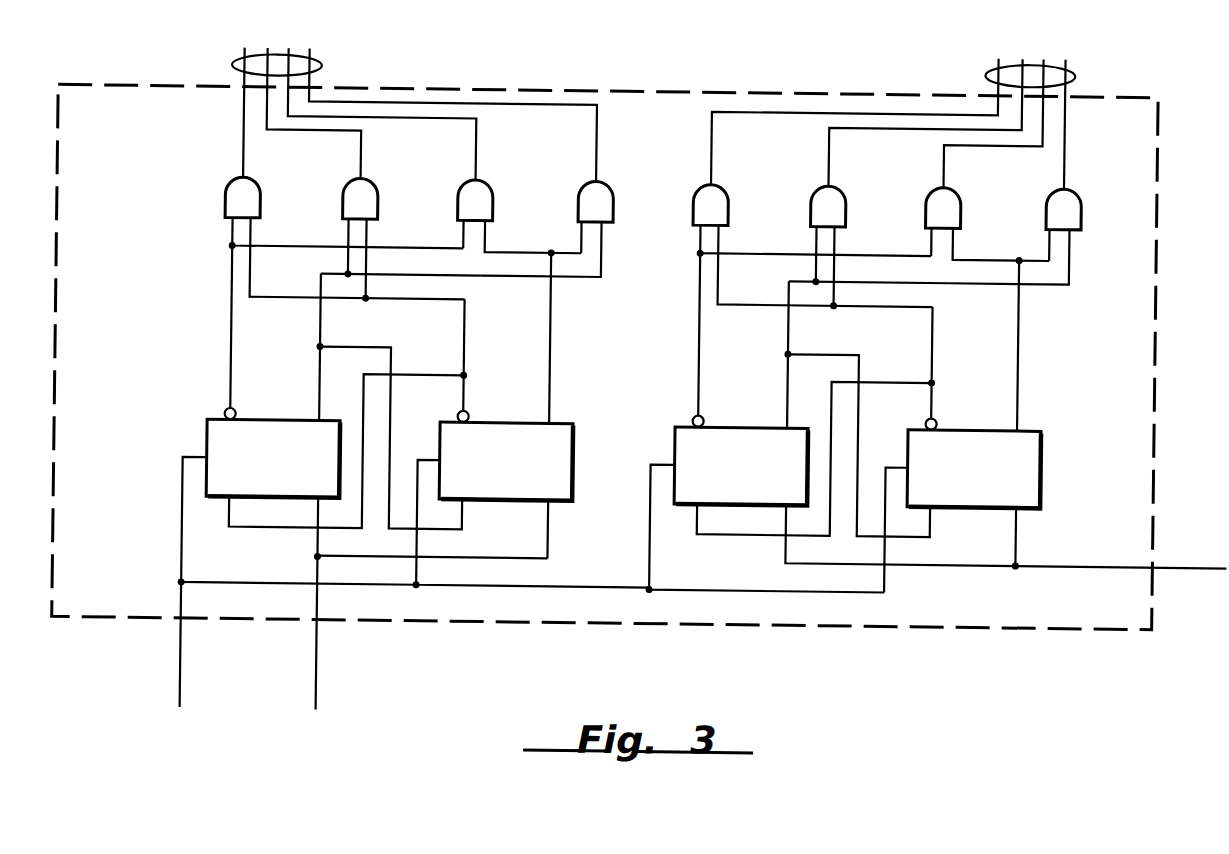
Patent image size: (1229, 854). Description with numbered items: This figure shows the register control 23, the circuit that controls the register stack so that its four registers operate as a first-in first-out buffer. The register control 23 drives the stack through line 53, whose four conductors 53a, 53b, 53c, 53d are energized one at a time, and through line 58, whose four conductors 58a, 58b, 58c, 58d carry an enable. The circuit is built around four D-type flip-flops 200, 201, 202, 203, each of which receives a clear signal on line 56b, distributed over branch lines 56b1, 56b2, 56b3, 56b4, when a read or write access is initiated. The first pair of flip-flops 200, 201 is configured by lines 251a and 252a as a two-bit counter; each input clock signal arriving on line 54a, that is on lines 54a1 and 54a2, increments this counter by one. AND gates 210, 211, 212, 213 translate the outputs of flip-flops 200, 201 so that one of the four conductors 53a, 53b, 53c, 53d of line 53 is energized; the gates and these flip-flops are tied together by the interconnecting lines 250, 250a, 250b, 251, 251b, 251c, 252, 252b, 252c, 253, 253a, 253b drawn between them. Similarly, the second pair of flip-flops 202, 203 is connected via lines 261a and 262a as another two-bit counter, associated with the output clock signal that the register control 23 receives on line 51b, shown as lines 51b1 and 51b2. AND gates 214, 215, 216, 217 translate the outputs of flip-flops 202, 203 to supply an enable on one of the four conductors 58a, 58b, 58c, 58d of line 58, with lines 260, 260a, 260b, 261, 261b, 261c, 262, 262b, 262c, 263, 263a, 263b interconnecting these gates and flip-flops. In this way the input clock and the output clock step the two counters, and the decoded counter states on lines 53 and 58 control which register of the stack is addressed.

The register control 23 is at (125, 86).
The line 53 is at (318, 69).
The input line 53a is at (241, 154).
The input line 53b is at (358, 154).
The input line 53c is at (474, 154).
The input line 53d is at (594, 154).
The line 58 is at (1060, 73).
The input line 58a is at (855, 121).
The input line 58b is at (926, 122).
The input line 58c is at (994, 123).
The input line 58d is at (1094, 125).
The AND gate 210 is at (257, 189).
The AND gate 211 is at (374, 189).
The AND gate 212 is at (489, 189).
The AND gate 213 is at (610, 189).
The AND gate 214 is at (739, 203).
The AND gate 215 is at (857, 205).
The AND gate 216 is at (972, 207).
The AND gate 217 is at (1093, 208).
The D type flip-flop FFφ 200 is at (283, 422).
The D type flip-flop FF1 201 is at (513, 421).
The D type flip-flop FF2 202 is at (741, 449).
The D type flip-flop FF3 203 is at (974, 452).
The line 250 is at (230, 384).
The line 250a is at (230, 245).
The line 250b is at (461, 239).
The line 251 is at (318, 365).
The line 251a is at (337, 348).
The line 251b is at (346, 237).
The line 251c is at (584, 280).
The line 252 is at (464, 397).
The line 252a is at (415, 375).
The line 252b is at (279, 304).
The line 252c is at (366, 290).
The line 253 is at (551, 356).
The line 253a is at (499, 276).
The line 253b is at (582, 236).
The line 260 is at (672, 339).
The line 260a is at (722, 241).
The line 260b is at (874, 241).
The line 261 is at (758, 355).
The line 261a is at (859, 431).
The line 261b is at (784, 255).
The line 261c is at (1033, 272).
The line 262 is at (906, 367).
The line 262a is at (814, 439).
The line 262b is at (873, 269).
The line 262c is at (824, 287).
The line 263 is at (1051, 346).
The line 263a is at (880, 270).
The line 263b is at (1003, 245).
The line 54a is at (321, 678).
The line 54a1 is at (318, 547).
The line 54a2 is at (554, 546).
The line 56b is at (182, 675).
The clock line 56b1 is at (185, 570).
The clock line 56b2 is at (420, 570).
The clock line 56b3 is at (766, 530).
The clock line 56b4 is at (943, 536).
The line 51b is at (1122, 547).
The output line 51b1 is at (902, 537).
The output line 51b2 is at (1056, 537).